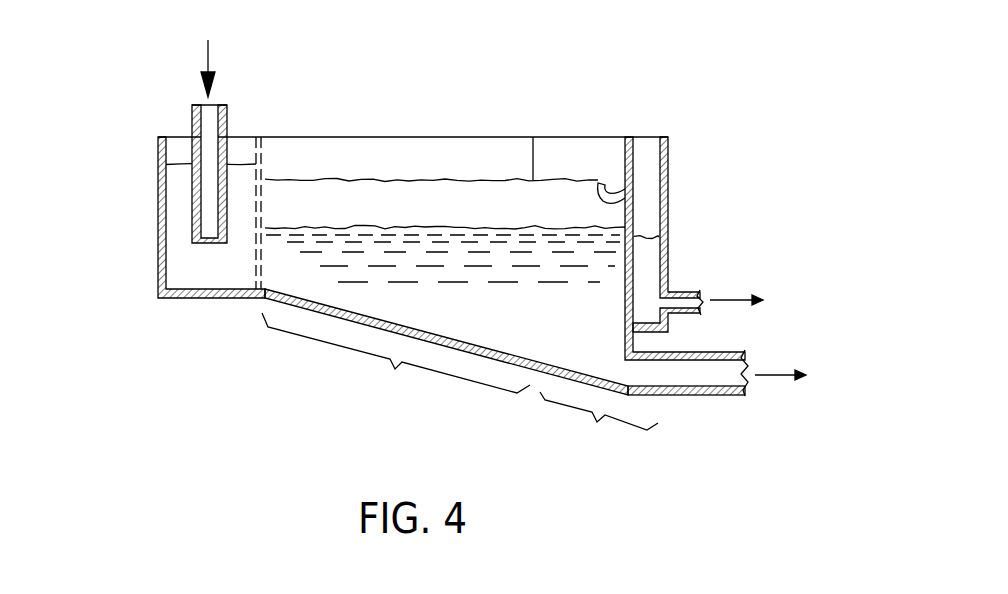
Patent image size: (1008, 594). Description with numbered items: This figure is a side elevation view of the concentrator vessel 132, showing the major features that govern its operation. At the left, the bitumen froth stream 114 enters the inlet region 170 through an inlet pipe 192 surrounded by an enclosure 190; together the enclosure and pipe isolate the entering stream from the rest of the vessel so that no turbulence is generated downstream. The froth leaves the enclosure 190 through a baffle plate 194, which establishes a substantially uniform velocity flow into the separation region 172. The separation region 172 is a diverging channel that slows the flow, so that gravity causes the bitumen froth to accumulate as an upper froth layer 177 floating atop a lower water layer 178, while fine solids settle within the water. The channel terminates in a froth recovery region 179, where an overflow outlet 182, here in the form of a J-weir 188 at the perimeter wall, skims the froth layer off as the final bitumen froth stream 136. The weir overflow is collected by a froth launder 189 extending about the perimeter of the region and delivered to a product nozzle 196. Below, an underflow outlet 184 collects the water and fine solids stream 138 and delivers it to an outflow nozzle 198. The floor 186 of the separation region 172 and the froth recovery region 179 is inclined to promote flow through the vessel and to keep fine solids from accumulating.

The bitumen froth stream 114 is at (210, 55).
The concentrator vessel 132 is at (449, 84).
The final bitumen froth stream 136 is at (727, 297).
The water and fine solids stream 138 is at (770, 375).
The inlet region 170 is at (173, 210).
The separation region 172 is at (396, 361).
The upper froth layer 177 is at (338, 197).
The lower water layer 178 is at (488, 315).
The froth recovery region 179 is at (599, 427).
The overflow outlet 182 is at (626, 190).
The underflow outlet 184 is at (627, 375).
The floor 186 is at (480, 355).
The J-weir 188 is at (605, 195).
The froth launder 189 is at (647, 147).
The enclosure 190 is at (160, 272).
The inlet pipe 192 is at (193, 117).
The baffle plate 194 is at (255, 257).
The product nozzle 196 is at (680, 292).
The outflow nozzle 198 is at (728, 375).